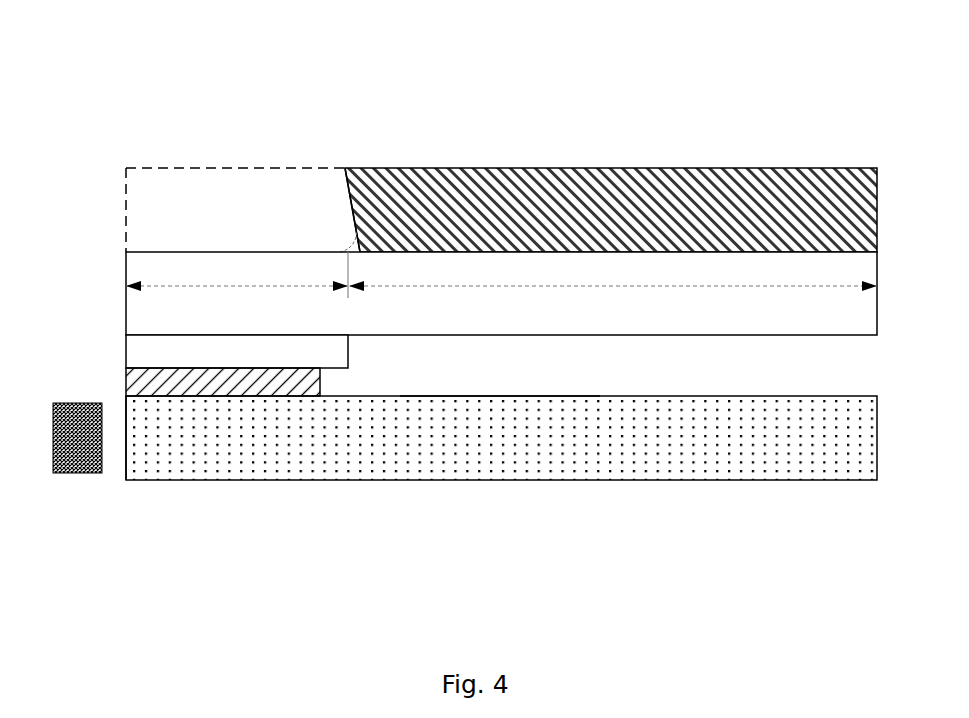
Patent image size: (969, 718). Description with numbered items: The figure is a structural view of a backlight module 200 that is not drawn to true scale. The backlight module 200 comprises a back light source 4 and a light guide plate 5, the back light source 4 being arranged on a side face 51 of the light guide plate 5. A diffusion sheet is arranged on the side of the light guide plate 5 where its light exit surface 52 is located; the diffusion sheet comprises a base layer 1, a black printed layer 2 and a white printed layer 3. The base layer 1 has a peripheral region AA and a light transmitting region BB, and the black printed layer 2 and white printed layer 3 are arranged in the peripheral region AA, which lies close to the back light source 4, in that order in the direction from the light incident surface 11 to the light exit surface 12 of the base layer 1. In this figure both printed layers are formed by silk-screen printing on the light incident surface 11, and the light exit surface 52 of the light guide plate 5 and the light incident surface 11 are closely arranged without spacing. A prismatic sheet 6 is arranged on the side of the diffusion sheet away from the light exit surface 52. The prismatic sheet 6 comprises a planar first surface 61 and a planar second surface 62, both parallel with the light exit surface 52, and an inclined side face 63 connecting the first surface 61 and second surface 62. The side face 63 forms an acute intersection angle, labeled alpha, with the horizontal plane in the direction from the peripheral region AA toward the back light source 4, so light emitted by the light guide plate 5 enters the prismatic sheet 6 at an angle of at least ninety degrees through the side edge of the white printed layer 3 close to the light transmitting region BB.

The backlight module 200 is at (60, 41).
The base layer 1 is at (792, 302).
The light incident surface 11 is at (619, 322).
The light exit surface 12 is at (517, 238).
The black printed layer 2 is at (175, 363).
The white printed layer 3 is at (199, 329).
The back light source 4 is at (50, 437).
The light guide plate 5 is at (793, 430).
The side face 51 is at (124, 433).
The light exit surface 52 is at (498, 414).
The prismatic sheet 6 is at (802, 212).
The first surface 61 is at (732, 240).
The second surface 62 is at (405, 152).
The side face 63 is at (348, 203).